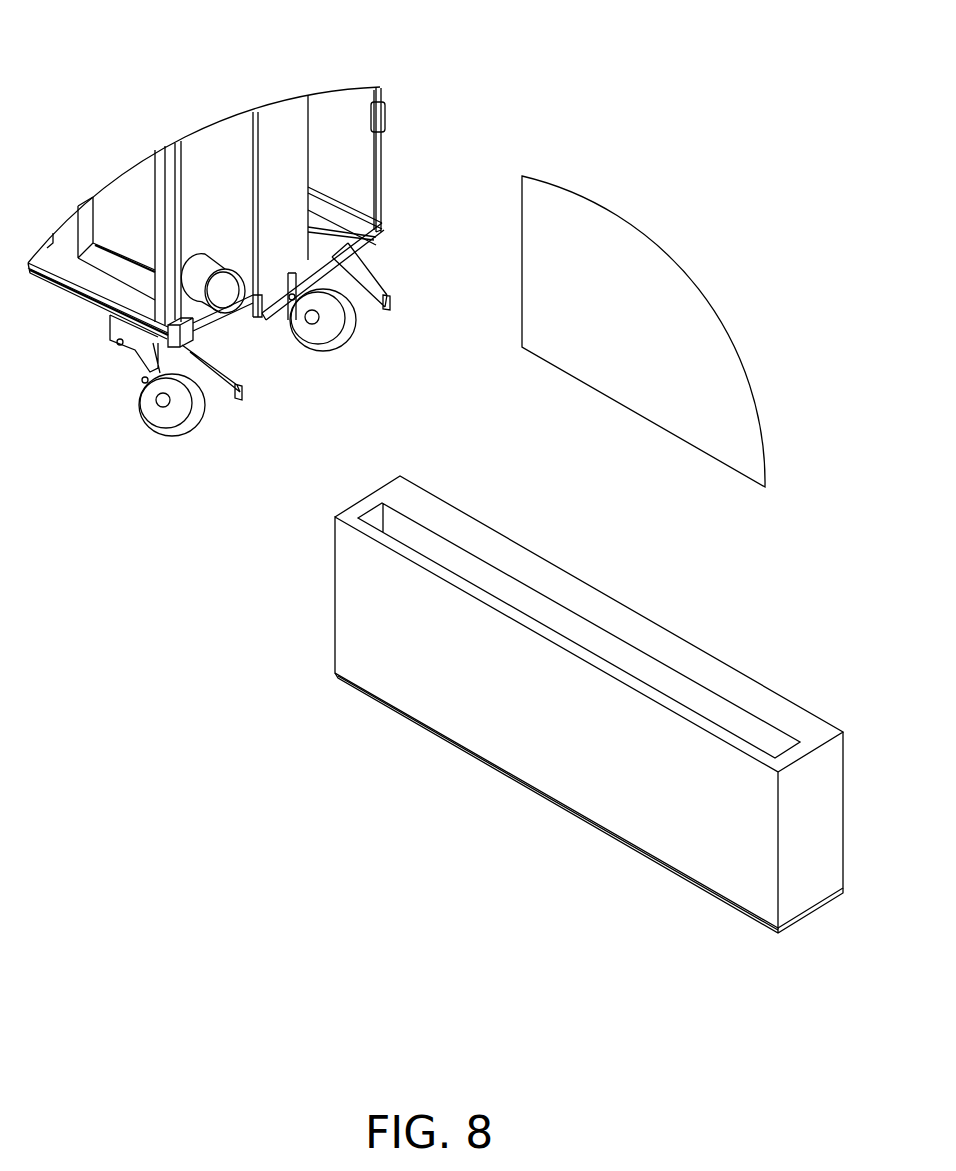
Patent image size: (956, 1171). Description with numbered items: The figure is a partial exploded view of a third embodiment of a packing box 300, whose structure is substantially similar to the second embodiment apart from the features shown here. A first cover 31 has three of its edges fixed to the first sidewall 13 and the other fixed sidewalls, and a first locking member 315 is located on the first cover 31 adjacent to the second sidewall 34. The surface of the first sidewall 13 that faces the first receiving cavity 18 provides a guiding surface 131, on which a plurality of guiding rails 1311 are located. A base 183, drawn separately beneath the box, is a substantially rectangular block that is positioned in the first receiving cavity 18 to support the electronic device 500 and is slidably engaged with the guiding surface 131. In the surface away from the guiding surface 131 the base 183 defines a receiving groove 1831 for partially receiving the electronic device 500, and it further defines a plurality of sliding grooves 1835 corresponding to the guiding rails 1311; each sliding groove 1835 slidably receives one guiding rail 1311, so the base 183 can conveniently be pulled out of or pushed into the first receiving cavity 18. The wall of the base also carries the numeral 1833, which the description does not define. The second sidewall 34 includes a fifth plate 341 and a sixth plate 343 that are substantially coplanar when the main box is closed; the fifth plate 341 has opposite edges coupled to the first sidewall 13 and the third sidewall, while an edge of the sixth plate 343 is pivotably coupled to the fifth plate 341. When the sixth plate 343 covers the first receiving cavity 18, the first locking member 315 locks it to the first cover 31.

The packing box 300 is at (137, 56).
The first cover 31 is at (381, 158).
The first locking member 315 is at (386, 112).
The first receiving cavity 18 is at (346, 172).
The guiding surface 131 is at (347, 229).
The guiding rails 1311 is at (350, 242).
The first sidewall 13 is at (370, 312).
The second sidewall 34 is at (376, 426).
The fifth plate 341 is at (192, 252).
The sixth plate 343 is at (268, 296).
The electronic device 500 is at (648, 282).
The base 183 is at (606, 696).
The receiving groove 1831 is at (435, 540).
The front wall 1833 is at (530, 735).
The sliding grooves 1835 is at (788, 929).